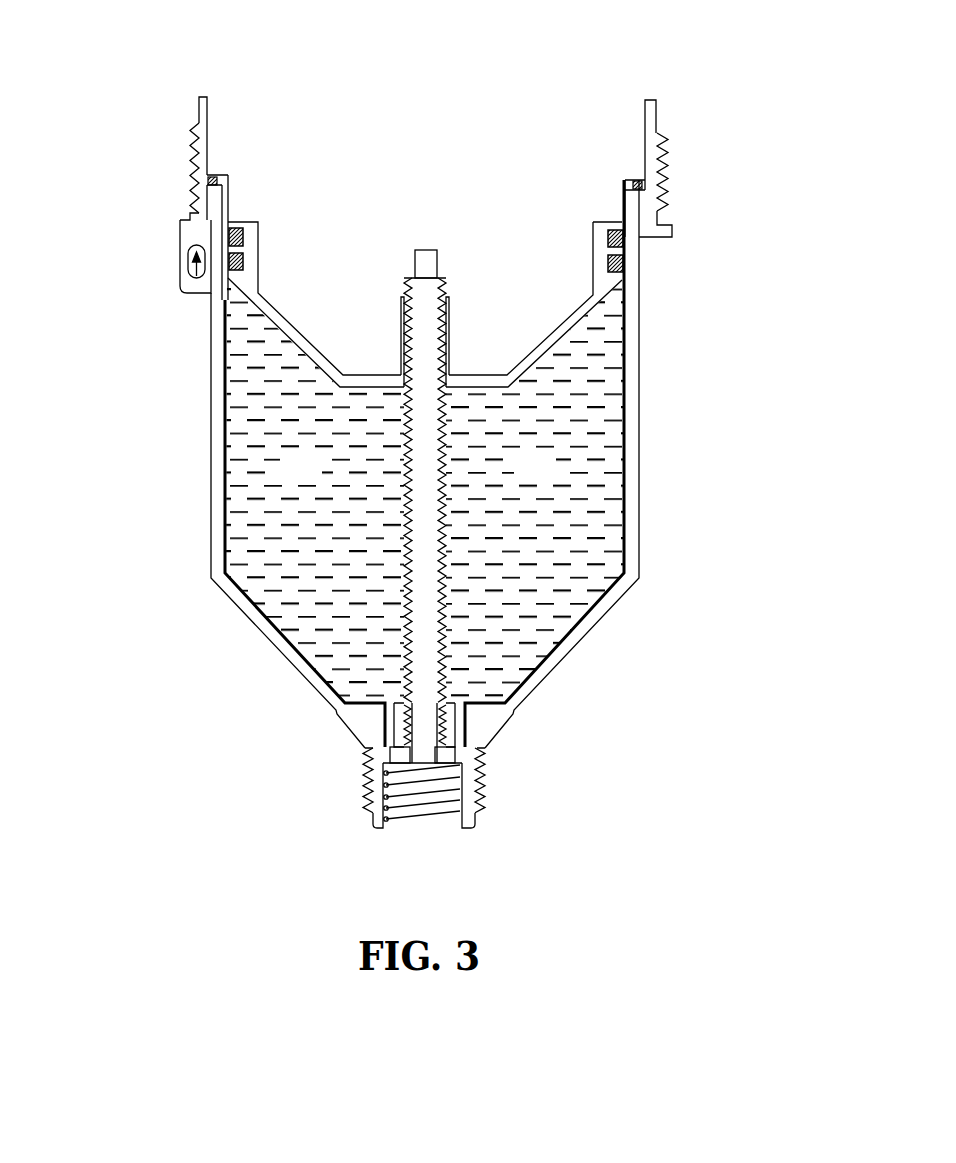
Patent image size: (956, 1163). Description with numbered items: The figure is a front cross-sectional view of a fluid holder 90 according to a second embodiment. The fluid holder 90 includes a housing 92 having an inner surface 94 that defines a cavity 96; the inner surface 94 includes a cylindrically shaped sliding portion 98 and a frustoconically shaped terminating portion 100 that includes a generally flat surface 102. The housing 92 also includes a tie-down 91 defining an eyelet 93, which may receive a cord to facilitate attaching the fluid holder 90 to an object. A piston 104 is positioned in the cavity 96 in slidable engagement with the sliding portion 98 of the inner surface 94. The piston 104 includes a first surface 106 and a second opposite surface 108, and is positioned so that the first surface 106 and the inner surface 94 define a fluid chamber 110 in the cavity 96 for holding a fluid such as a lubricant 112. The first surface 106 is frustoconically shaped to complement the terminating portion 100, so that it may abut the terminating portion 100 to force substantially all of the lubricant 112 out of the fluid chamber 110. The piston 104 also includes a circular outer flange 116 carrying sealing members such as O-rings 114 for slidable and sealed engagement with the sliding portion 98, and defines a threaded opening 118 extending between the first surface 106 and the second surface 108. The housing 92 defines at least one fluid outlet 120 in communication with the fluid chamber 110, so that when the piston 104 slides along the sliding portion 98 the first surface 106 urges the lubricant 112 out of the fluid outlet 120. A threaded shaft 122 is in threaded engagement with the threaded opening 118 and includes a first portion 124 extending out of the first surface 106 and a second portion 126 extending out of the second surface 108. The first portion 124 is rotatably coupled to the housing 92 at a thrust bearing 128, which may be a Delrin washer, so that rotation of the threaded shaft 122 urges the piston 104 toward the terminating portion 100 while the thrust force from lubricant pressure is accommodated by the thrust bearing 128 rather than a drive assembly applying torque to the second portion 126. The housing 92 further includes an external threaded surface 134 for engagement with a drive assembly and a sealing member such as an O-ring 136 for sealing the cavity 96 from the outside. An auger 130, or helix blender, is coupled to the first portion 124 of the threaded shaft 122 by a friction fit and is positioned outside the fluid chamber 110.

The fluid holder 90 is at (700, 58).
The tie-down 91 is at (185, 247).
The housing 92 is at (218, 500).
The eyelet 93 is at (193, 268).
The inner surface 94 is at (240, 472).
The cavity 96 is at (529, 318).
The sliding portion 98 is at (624, 363).
The terminating portion 100 is at (573, 609).
The flat surface 102 is at (490, 702).
The piston 104 is at (258, 305).
The first surface 106 is at (288, 336).
The second surface 108 is at (278, 314).
The fluid chamber 110 is at (553, 481).
The lubricant 112 is at (319, 481).
The O-rings 114 is at (625, 241).
The circular outer flange 116 is at (212, 298).
The threaded opening 118 is at (408, 284).
The fluid outlet 120 is at (383, 728).
The threaded shaft 122 is at (455, 598).
The first portion 124 is at (430, 580).
The second portion 126 is at (447, 292).
The thrust bearing 128 is at (383, 762).
The auger 130 is at (466, 769).
The external threaded surface 134 is at (193, 160).
The O-ring 136 is at (213, 180).